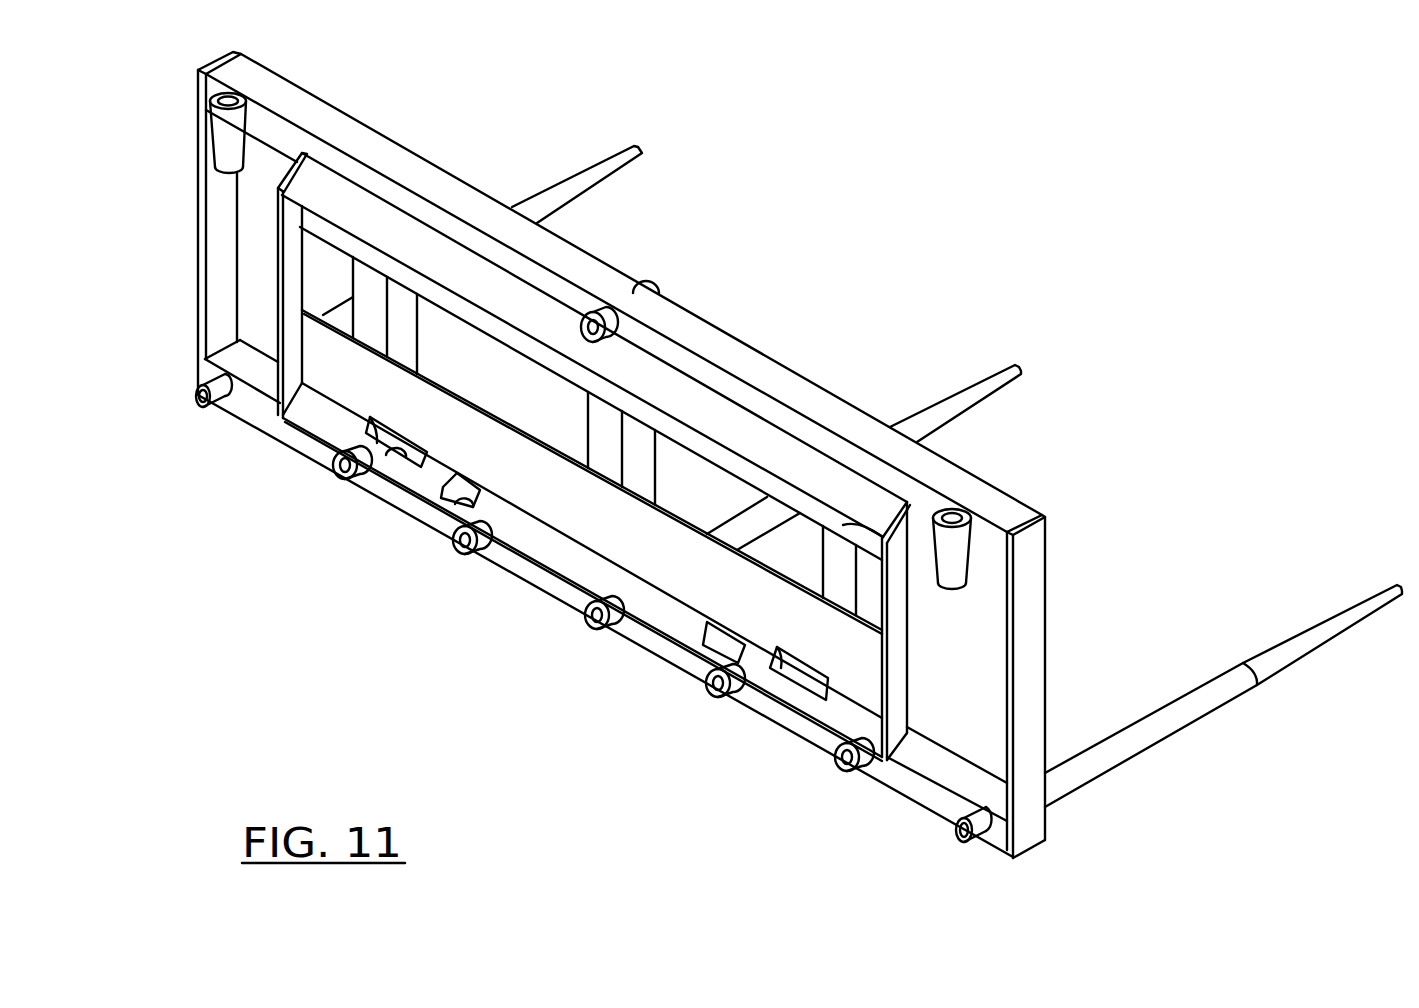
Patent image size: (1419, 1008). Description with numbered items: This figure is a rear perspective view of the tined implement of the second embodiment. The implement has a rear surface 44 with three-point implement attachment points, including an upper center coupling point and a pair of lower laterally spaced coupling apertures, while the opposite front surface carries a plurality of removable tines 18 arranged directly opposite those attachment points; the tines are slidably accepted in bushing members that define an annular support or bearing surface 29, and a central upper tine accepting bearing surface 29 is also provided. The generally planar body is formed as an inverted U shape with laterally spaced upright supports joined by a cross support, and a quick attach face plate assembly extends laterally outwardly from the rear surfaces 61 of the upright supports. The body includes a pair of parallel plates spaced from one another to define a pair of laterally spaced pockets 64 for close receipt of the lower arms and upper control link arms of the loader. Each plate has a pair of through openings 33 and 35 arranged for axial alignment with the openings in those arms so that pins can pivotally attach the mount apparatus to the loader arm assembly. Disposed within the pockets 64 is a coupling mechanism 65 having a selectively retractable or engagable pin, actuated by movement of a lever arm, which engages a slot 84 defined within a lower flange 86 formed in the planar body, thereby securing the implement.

The removable tines 18 is at (937, 413).
The bearing surface 29 is at (343, 481).
The through opening 33 is at (397, 434).
The through opening 35 is at (782, 678).
The rear surface 44 is at (930, 797).
The rear surface 61 is at (892, 782).
The pockets 64 is at (843, 525).
The coupling mechanism 65 is at (463, 504).
The slot 84 is at (377, 443).
The lower flange 86 is at (310, 420).